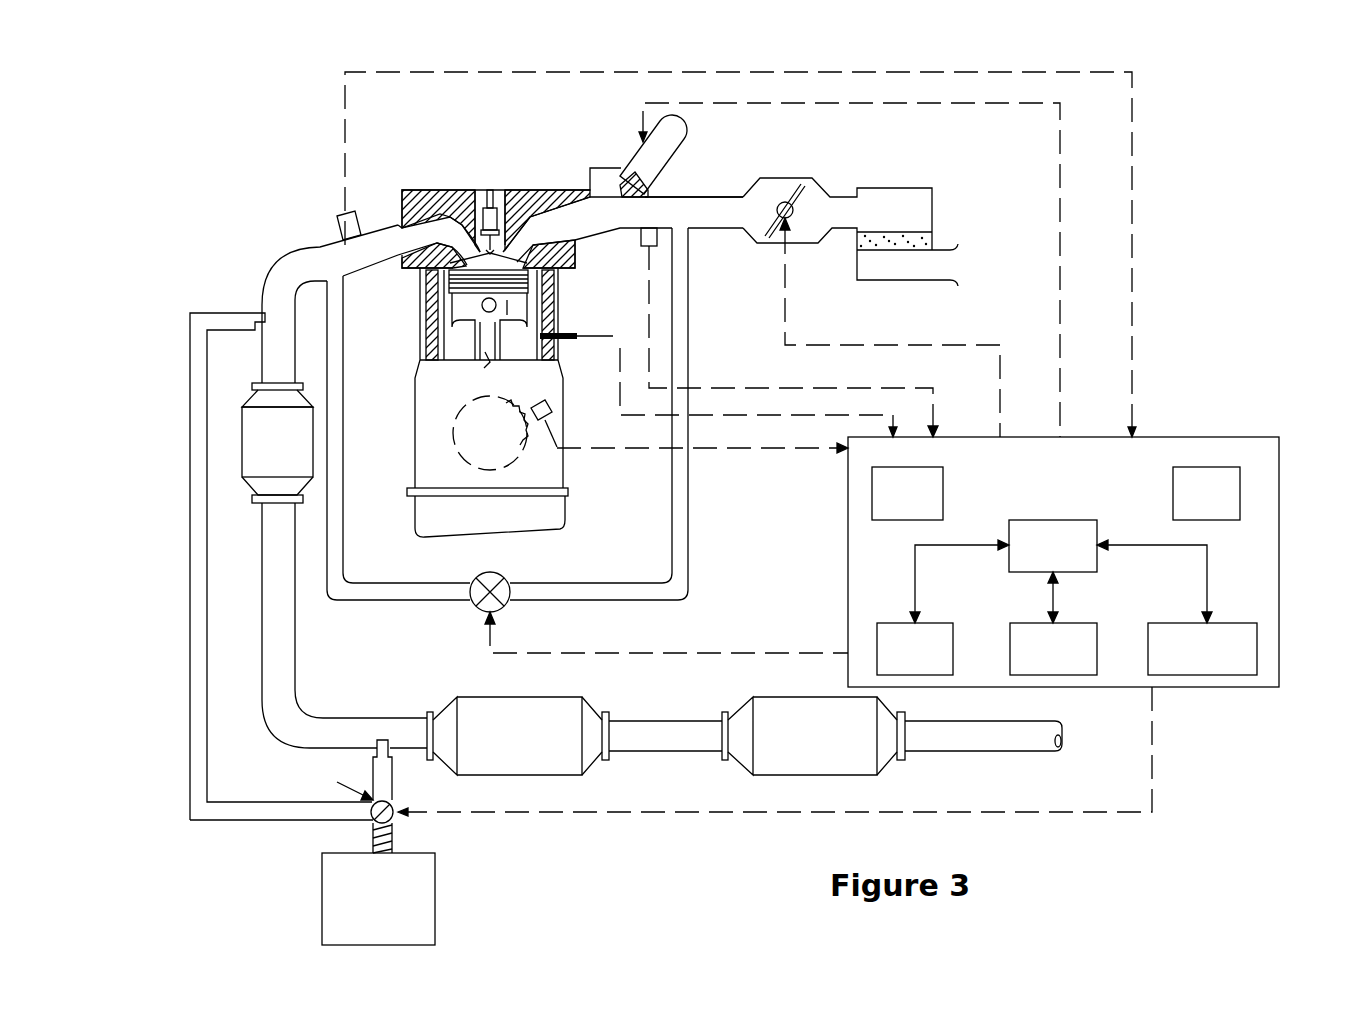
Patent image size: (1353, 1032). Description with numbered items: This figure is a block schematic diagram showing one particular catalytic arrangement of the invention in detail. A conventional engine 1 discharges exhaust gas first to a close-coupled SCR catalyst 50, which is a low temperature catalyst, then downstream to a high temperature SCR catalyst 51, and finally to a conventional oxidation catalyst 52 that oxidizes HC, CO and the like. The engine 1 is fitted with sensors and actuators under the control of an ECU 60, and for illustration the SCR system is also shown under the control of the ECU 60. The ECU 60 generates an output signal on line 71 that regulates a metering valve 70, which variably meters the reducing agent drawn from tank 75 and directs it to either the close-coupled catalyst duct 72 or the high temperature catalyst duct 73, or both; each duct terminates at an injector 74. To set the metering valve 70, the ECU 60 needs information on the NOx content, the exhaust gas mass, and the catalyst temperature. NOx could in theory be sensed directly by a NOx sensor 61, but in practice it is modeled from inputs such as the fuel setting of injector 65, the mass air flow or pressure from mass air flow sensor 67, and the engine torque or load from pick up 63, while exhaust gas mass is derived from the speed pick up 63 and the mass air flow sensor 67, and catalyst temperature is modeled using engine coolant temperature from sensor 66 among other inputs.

The engine 1 is at (402, 442).
The close-coupled SCR catalyst 50 is at (247, 488).
The high temperature SCR catalyst 51 is at (515, 768).
The oxidation catalyst 52 is at (810, 768).
The ECU 60 is at (1280, 573).
The NOx sensor 61 is at (338, 222).
The speed pick up 63 is at (550, 412).
The injector 65 is at (800, 105).
The engine coolant temperature sensor 66 is at (568, 333).
The mass air flow sensor 67 is at (760, 386).
The metering valve 70 is at (344, 638).
The line 71 is at (563, 813).
The close-coupled catalyst duct 72 is at (188, 560).
The high temperature catalyst duct 73 is at (396, 783).
The injector 74 is at (377, 746).
The tank 75 is at (433, 920).